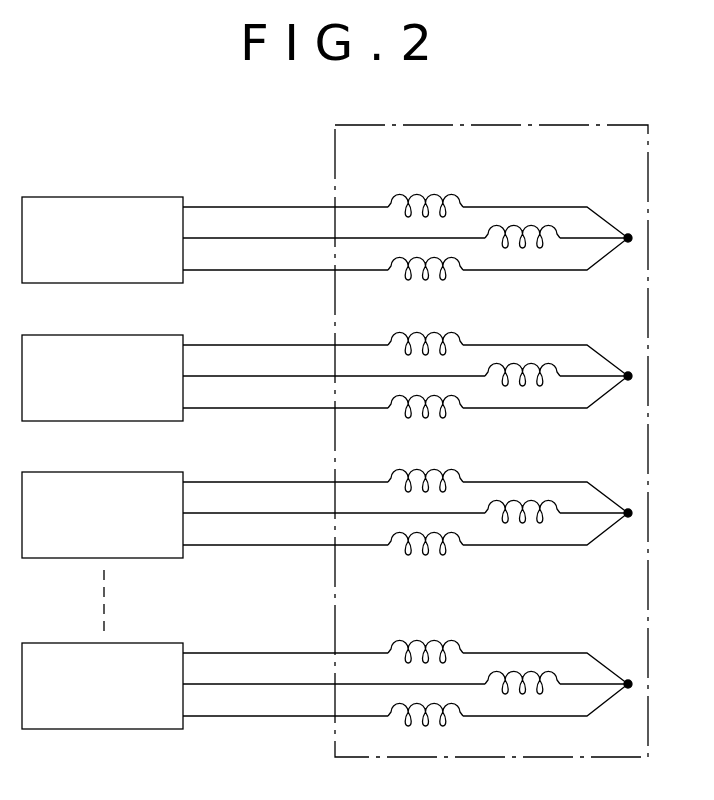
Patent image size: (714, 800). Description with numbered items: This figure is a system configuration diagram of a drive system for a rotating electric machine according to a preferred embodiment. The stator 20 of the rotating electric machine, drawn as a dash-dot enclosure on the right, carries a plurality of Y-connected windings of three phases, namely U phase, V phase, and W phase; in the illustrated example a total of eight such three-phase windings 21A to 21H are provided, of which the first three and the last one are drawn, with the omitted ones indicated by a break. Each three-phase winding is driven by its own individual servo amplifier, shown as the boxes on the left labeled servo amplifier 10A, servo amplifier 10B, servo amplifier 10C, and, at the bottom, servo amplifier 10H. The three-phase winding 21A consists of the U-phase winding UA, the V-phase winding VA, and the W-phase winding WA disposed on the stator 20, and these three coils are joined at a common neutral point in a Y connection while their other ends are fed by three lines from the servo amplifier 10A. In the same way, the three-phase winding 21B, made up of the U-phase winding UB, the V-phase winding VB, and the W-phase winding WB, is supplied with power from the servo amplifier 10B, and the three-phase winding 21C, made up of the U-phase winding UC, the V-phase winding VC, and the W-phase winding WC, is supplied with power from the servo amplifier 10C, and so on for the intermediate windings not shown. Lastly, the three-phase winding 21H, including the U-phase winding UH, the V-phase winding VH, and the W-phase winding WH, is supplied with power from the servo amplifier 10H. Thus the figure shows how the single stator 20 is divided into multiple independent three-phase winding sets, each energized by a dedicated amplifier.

The servo amplifier 10A is at (55, 197).
The servo amplifier 10B is at (55, 335).
The servo amplifier 10C is at (55, 472).
The servo amplifier 10H is at (125, 643).
The stator 20 is at (477, 135).
The three-phase winding 21A is at (410, 225).
The three-phase winding 21B is at (410, 363).
The three-phase winding 21C is at (410, 500).
The three-phase winding 21H is at (411, 671).
The U-phase winding UA is at (425, 188).
The V-phase winding VA is at (517, 225).
The W-phase winding WA is at (420, 281).
The U-phase winding UB is at (425, 326).
The V-phase winding VB is at (517, 363).
The W-phase winding WB is at (420, 419).
The U-phase winding UC is at (425, 463).
The V-phase winding VC is at (517, 500).
The W-phase winding WC is at (420, 556).
The U-phase winding UH is at (425, 634).
The V-phase winding VH is at (517, 671).
The W-phase winding WH is at (420, 727).